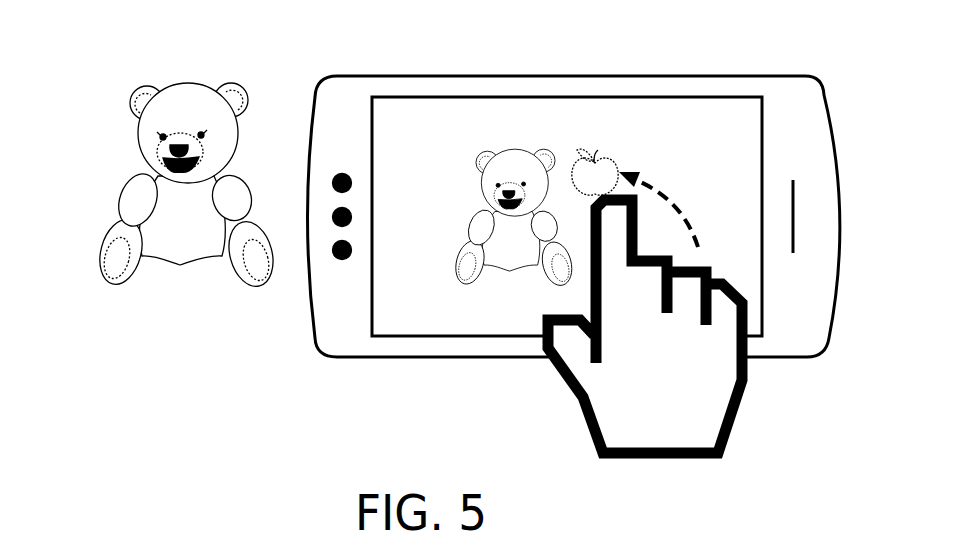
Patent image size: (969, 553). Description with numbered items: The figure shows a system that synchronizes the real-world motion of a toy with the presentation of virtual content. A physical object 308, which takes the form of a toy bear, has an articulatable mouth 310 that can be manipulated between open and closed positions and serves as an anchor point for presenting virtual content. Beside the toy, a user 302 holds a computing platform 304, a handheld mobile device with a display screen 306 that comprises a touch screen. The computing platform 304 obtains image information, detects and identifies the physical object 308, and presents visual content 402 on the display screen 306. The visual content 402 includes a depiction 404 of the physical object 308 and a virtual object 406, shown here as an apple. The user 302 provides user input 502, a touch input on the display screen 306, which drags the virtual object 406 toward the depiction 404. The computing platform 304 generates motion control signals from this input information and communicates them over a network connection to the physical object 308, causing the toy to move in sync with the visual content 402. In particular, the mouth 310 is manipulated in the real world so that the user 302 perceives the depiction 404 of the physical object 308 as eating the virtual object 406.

The user 302 is at (748, 383).
The computing platform 304 is at (667, 76).
The display screen 306 is at (425, 96).
The physical object 308 is at (191, 82).
The mouth 310 is at (168, 157).
The visual content 402 is at (446, 140).
The depiction of the physical object 404 is at (482, 225).
The virtual object 406 is at (610, 162).
The user input 502 is at (678, 208).